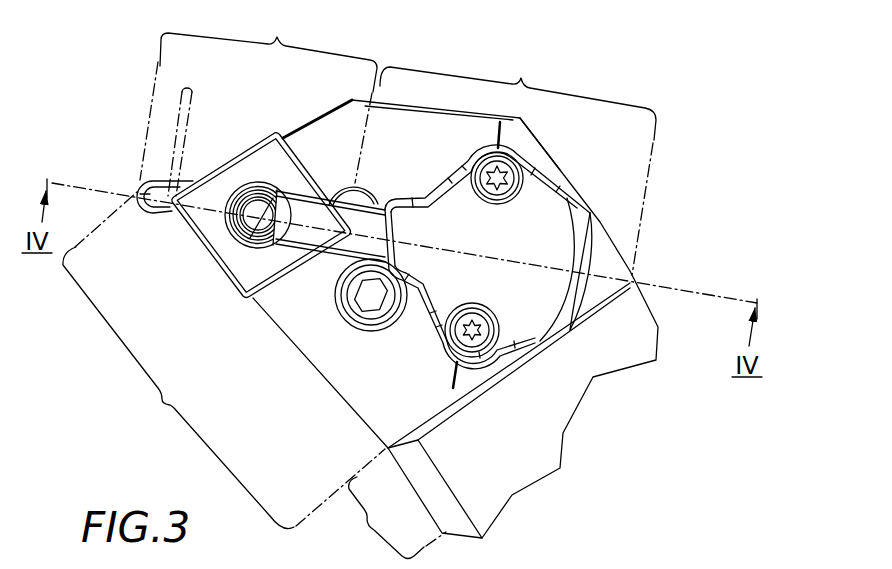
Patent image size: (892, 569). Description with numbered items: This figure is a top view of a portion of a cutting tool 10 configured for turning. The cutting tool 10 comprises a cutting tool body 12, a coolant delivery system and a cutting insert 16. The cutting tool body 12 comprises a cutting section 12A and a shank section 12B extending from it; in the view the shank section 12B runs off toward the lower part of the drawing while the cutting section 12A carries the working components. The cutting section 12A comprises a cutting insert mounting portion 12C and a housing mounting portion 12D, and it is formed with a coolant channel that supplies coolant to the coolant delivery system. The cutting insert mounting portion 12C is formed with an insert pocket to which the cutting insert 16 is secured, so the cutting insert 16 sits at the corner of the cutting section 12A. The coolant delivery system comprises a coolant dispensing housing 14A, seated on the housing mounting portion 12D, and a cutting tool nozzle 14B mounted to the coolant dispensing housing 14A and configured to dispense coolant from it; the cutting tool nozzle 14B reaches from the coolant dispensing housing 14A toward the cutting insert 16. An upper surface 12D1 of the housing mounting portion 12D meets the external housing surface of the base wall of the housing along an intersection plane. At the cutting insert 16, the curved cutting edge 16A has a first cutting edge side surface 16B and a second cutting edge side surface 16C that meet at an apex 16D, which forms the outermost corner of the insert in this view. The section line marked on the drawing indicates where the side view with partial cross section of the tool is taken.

The cutting tool 10 is at (666, 80).
The cutting tool body 12 is at (500, 542).
The cutting section 12A is at (224, 360).
The shank section 12B is at (385, 519).
The cutting insert mounting portion 12C is at (258, 95).
The housing mounting portion 12D is at (518, 162).
The upper surface 12D1 is at (521, 144).
The coolant dispensing housing 14A is at (422, 318).
The cutting tool nozzle 14B is at (327, 263).
The cutting insert 16 is at (238, 263).
The cutting edge 16A is at (191, 87).
The first cutting edge side surface 16B is at (178, 194).
The second cutting edge side surface 16C is at (170, 220).
The apex 16D is at (156, 211).